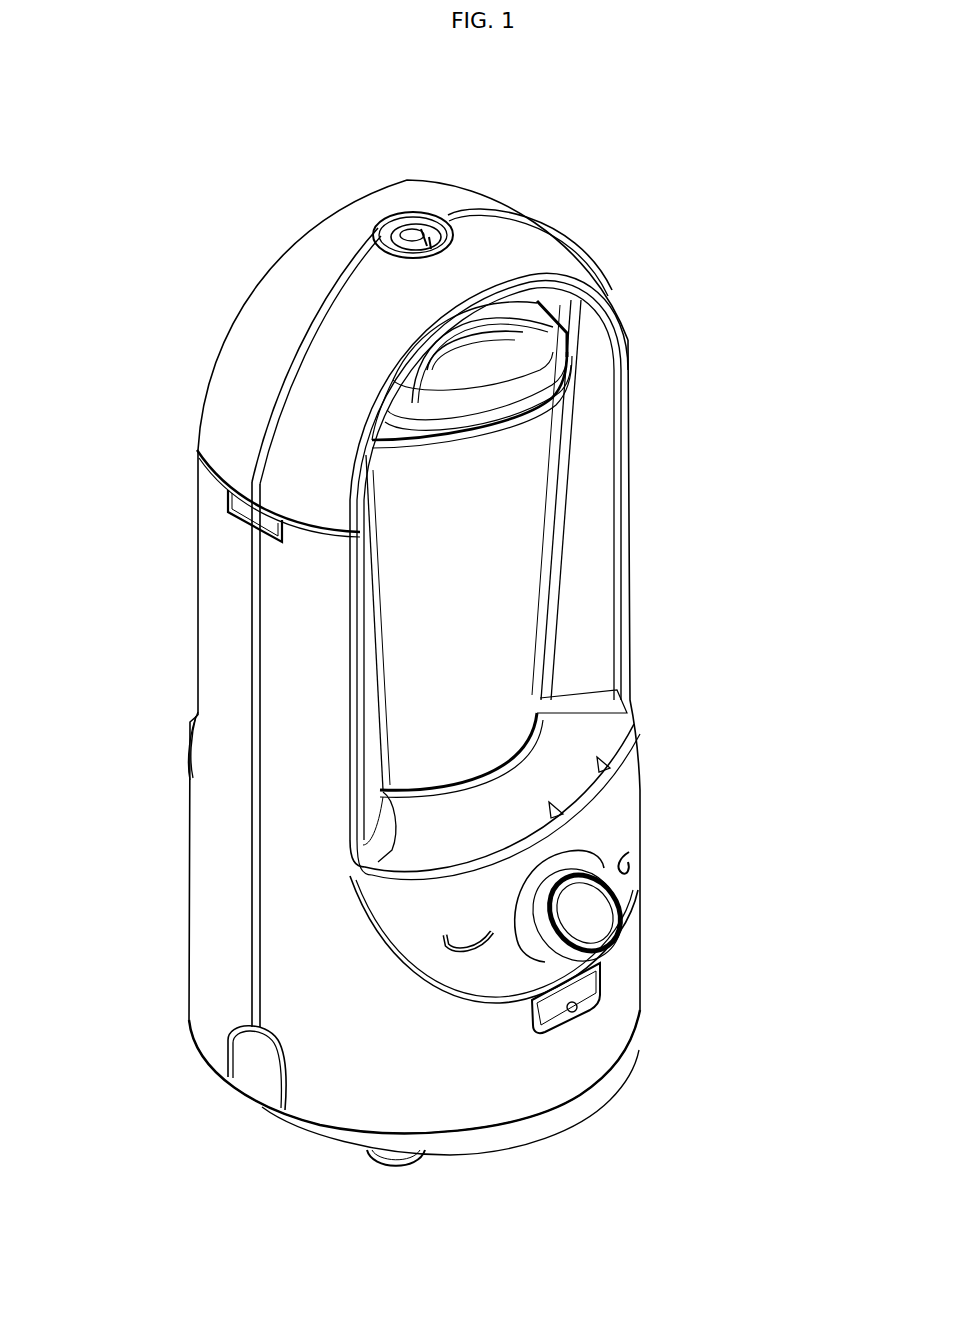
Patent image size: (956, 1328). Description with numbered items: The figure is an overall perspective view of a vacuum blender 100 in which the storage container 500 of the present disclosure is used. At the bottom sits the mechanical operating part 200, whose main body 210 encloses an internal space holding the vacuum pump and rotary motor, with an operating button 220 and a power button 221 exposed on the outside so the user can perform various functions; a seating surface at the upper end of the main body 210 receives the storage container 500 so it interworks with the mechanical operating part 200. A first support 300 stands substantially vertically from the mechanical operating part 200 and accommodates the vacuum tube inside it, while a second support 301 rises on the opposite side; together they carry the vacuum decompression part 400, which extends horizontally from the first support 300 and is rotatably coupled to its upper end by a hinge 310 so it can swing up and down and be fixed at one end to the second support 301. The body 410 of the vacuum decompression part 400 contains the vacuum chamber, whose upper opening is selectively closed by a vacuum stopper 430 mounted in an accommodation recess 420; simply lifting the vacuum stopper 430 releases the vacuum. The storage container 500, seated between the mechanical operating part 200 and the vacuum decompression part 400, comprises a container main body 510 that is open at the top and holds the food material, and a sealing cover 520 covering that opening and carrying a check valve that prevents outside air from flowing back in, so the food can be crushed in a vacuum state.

The vacuum blender 100 is at (725, 722).
The mechanical operating part 200 is at (662, 842).
The main body 210 is at (510, 1082).
The operating button 220 is at (596, 916).
The power button 221 is at (598, 1006).
The first support 300 is at (138, 688).
The second support 301 is at (650, 548).
The hinge 310 is at (248, 483).
The vacuum decompression part 400 is at (235, 270).
The body 410 is at (212, 367).
The accommodation recess 420 is at (418, 223).
The vacuum stopper 430 is at (383, 215).
The storage container 500 is at (578, 614).
The container main body 510 is at (520, 525).
The sealing cover 520 is at (530, 362).